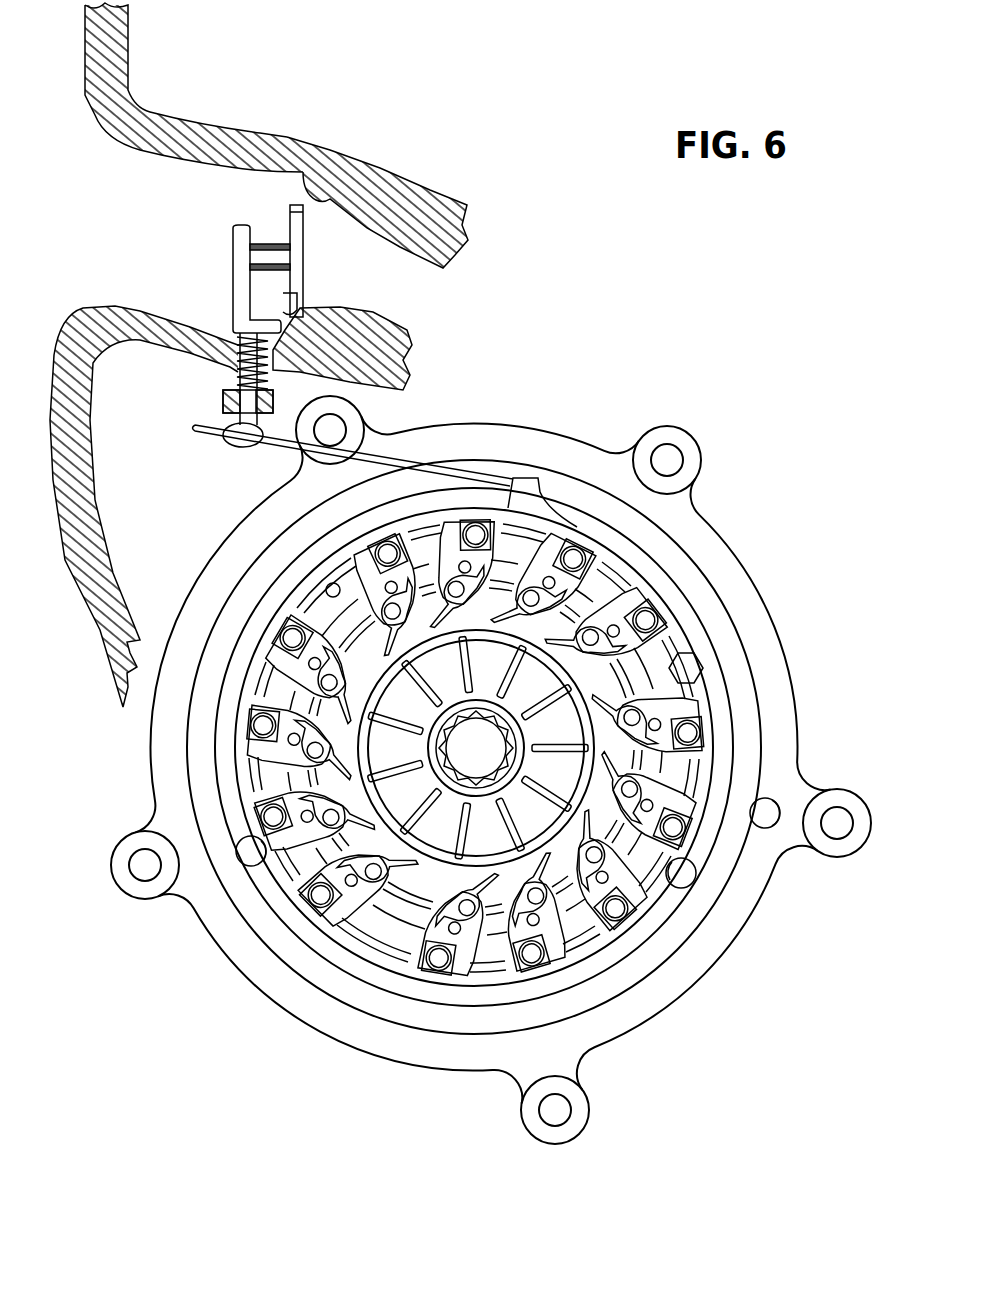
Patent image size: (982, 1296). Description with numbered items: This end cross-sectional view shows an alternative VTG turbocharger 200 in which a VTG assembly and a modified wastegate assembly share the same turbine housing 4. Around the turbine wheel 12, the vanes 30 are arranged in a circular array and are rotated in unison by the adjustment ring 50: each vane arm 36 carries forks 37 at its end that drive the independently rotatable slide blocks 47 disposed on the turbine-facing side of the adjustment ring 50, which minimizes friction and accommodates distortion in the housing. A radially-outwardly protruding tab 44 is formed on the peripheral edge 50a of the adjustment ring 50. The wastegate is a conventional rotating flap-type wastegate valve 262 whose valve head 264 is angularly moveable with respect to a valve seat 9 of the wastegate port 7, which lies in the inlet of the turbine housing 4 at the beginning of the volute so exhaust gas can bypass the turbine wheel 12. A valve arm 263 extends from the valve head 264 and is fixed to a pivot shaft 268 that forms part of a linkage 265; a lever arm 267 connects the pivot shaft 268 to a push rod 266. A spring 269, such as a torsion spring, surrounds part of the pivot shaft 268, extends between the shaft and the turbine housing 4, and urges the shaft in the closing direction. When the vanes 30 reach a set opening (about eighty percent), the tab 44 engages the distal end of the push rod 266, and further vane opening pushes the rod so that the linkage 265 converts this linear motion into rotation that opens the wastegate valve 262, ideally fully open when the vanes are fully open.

The turbine housing 4 is at (173, 127).
The wastegate port 7 is at (333, 235).
The valve seat 9 is at (297, 293).
The turbine wheel 12 is at (420, 783).
The vanes 30 is at (408, 870).
The vane arm 36 is at (690, 680).
The forks 37 is at (710, 705).
The tab 44 is at (540, 470).
The slide blocks 47 is at (615, 920).
The adjustment ring 50 is at (613, 537).
The peripheral edge 50a is at (703, 613).
The VTG turbocharger 200 is at (572, 280).
The wastegate valve 262 is at (278, 246).
The valve arm 263 is at (283, 262).
The valve head 264 is at (297, 205).
The linkage 265 is at (194, 441).
The push rod 266 is at (418, 467).
The lever arm 267 is at (237, 420).
The pivot shaft 268 is at (237, 293).
The spring 269 is at (235, 380).